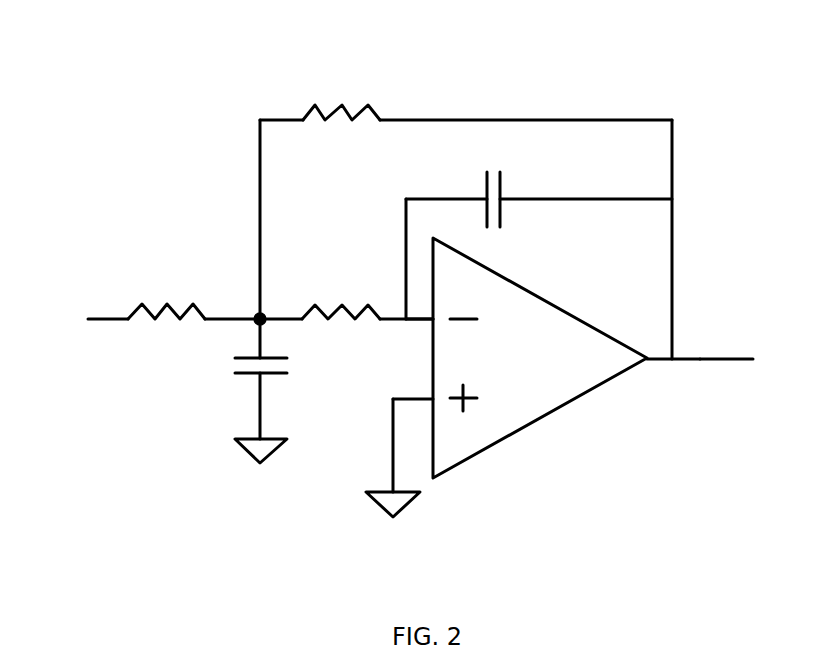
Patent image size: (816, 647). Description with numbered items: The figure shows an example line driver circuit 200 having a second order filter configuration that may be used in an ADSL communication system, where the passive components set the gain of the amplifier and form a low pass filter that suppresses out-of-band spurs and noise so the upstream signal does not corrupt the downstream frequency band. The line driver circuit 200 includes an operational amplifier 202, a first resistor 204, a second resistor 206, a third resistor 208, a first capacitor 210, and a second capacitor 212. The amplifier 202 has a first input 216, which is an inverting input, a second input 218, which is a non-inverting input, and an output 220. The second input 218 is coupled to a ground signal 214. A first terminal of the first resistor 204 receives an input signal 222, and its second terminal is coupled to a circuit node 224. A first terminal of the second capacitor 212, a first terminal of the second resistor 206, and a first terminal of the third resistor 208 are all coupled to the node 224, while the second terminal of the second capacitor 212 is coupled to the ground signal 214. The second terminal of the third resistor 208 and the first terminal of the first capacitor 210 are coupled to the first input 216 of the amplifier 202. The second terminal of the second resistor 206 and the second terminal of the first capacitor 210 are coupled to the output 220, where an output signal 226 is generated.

The line driver circuit 200 is at (178, 37).
The operational amplifier 202 is at (548, 292).
The first resistor 204 is at (167, 305).
The second resistor 206 is at (335, 103).
The third resistor 208 is at (348, 300).
The first capacitor 210 is at (487, 168).
The second capacitor 212 is at (240, 372).
The ground signal 214 is at (250, 455).
The first input 216 is at (433, 310).
The second input 218 is at (430, 395).
The output 220 is at (647, 355).
The input signal 222 is at (100, 318).
The circuit node 224 is at (258, 315).
The output signal 226 is at (720, 359).